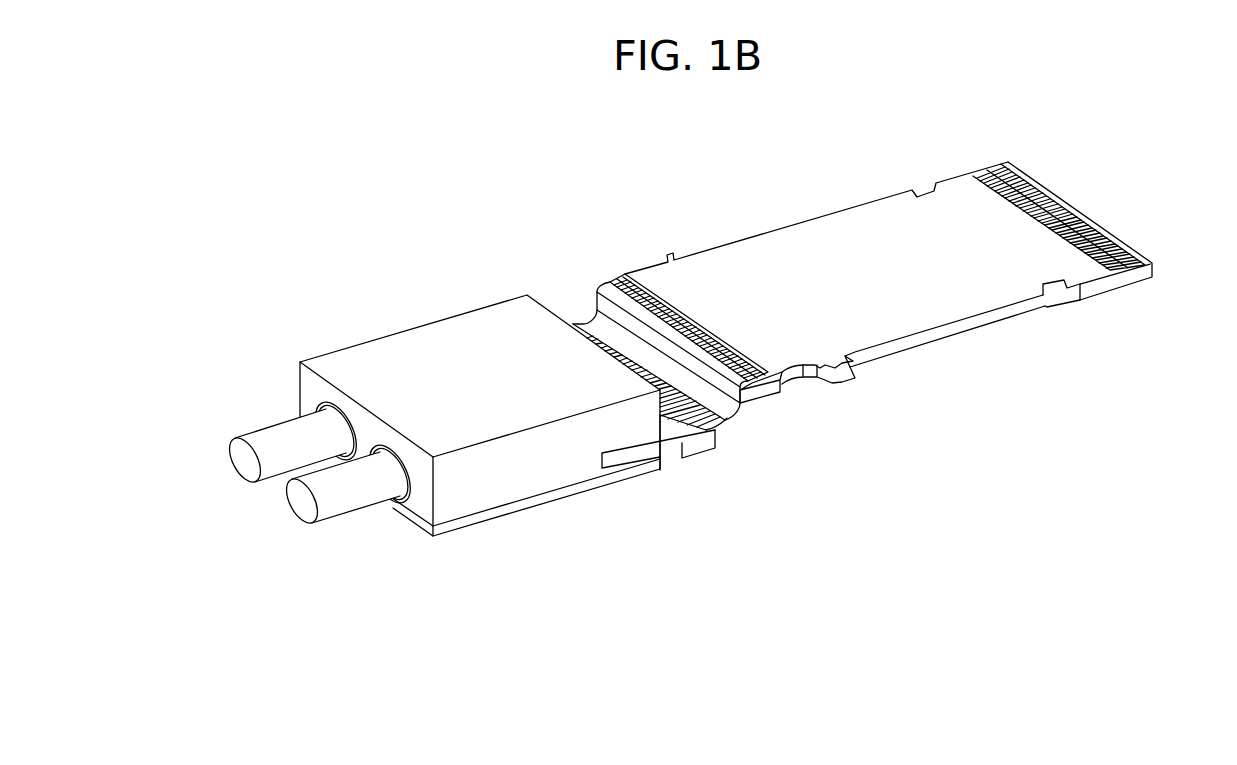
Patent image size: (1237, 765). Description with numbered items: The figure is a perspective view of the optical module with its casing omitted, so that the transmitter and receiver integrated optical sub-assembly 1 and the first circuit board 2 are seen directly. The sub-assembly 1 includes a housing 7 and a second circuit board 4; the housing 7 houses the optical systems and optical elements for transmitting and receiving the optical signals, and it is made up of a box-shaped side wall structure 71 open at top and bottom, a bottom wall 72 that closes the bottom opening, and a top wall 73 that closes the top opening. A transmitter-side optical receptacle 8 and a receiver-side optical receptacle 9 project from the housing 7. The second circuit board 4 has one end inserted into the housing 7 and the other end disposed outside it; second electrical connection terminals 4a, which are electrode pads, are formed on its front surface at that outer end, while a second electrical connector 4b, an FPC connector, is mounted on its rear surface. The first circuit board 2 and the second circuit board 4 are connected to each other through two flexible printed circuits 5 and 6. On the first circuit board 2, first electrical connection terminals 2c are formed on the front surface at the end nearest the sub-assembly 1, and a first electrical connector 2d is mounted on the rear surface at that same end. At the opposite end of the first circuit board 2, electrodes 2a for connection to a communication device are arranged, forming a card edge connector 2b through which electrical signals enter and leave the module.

The transmitter and receiver integrated optical sub-assembly 1 is at (324, 234).
The first circuit board 2 is at (836, 233).
The electrodes 2a is at (1006, 168).
The card edge connector 2b is at (1094, 207).
The first electrical connection terminals 2c is at (757, 355).
The first electrical connector 2d is at (768, 395).
The second circuit board 4 is at (632, 456).
The second electrical connection terminals 4a is at (680, 434).
The second electrical connector 4b is at (710, 450).
The flexible printed circuit 5 is at (604, 288).
The flexible printed circuit 6 is at (730, 433).
The housing 7 is at (430, 319).
The transmitter-side optical receptacle 8 is at (348, 490).
The receiver-side optical receptacle 9 is at (280, 440).
The side wall structure 71 is at (465, 499).
The bottom wall 72 is at (547, 508).
The top wall 73 is at (352, 364).